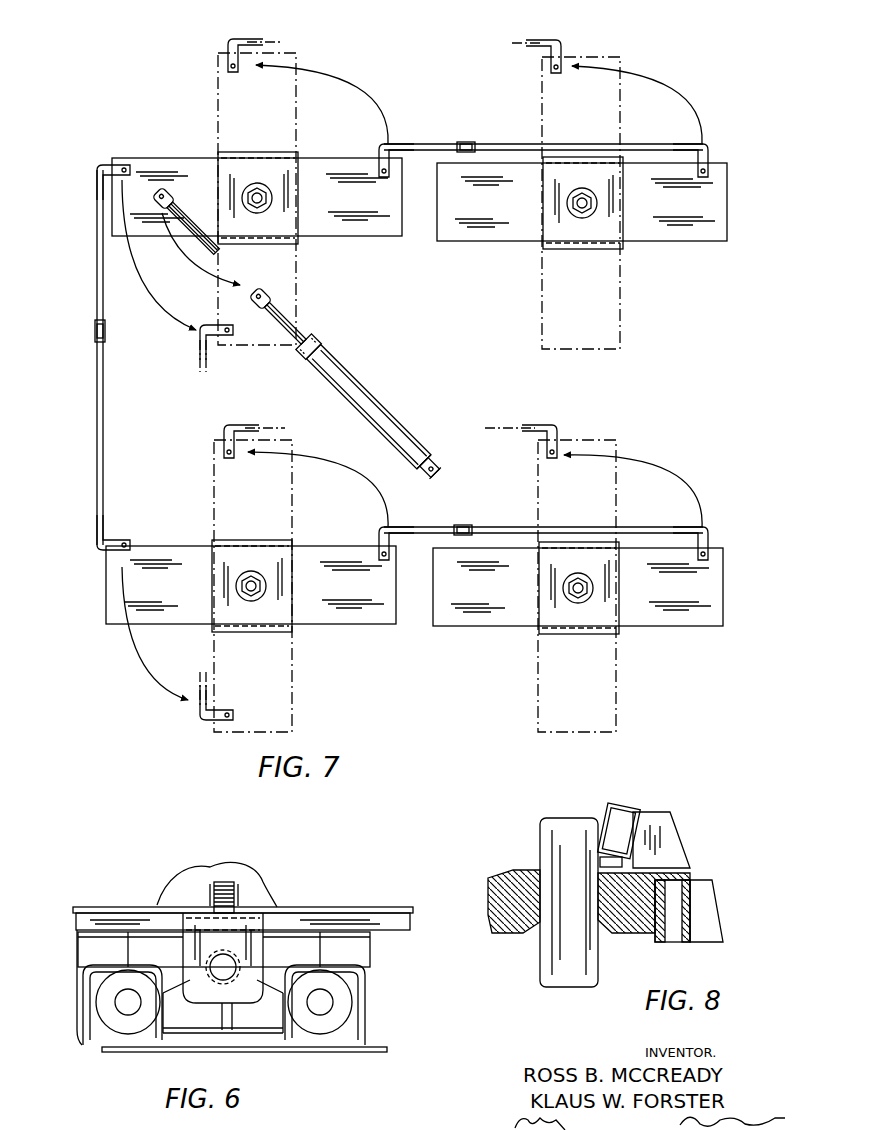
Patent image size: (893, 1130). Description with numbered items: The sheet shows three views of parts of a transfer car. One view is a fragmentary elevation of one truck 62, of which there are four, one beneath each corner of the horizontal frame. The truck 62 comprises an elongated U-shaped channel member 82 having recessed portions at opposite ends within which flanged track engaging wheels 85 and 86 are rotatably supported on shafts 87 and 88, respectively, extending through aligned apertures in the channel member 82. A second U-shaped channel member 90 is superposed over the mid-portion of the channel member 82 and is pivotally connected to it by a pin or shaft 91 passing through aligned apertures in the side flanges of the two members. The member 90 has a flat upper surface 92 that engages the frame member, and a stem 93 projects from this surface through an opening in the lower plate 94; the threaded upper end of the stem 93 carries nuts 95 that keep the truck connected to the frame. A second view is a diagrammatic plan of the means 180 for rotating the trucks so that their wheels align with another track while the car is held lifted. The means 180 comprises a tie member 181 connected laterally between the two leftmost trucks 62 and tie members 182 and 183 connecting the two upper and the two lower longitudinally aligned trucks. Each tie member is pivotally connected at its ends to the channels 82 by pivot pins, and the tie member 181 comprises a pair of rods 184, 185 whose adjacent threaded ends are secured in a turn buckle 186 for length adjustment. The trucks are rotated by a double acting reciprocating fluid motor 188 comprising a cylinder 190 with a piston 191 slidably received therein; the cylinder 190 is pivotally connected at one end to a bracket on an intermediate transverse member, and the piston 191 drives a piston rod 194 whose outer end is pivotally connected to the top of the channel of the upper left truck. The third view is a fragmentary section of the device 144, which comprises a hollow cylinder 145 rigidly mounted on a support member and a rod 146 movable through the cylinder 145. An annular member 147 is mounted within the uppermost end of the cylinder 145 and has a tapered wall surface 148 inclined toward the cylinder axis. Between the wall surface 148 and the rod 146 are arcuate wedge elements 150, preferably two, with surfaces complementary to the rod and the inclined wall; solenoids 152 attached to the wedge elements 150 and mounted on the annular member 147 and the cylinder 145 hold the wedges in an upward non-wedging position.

In FIG. 7, the truck 62 is at (257, 164).
In FIG. 7, the flat upper surface 92 is at (292, 172).
In FIG. 7, the stem 93 is at (265, 200).
In FIG. 6, the stem 93 is at (222, 881).
In FIG. 7, the tie member 182 is at (477, 143).
In FIG. 7, the tie member 183 is at (469, 527).
In FIG. 7, the tie member 181 is at (107, 357).
In FIG. 7, the rod 185 is at (97, 300).
In FIG. 7, the rod 184 is at (96, 520).
In FIG. 7, the turn buckle 186 is at (108, 331).
In FIG. 7, the means for rotating the trucks 180 is at (364, 364).
In FIG. 7, the piston rod 194 is at (295, 326).
In FIG. 7, the piston 191 is at (320, 346).
In FIG. 7, the cylinder 190 is at (384, 421).
In FIG. 7, the double acting reciprocating fluid motor 188 is at (414, 451).
In FIG. 6, the lower plate 94 is at (130, 908).
In FIG. 6, the nuts 95 is at (239, 895).
In FIG. 6, the U-shaped channel member 90 is at (265, 915).
In FIG. 6, the pin or shaft 91 is at (228, 976).
In FIG. 6, the U-shaped channel member 82 is at (362, 950).
In FIG. 6, the shaft 88 is at (328, 1000).
In FIG. 6, the flanged track engaging wheel 86 is at (352, 1026).
In FIG. 6, the shaft 87 is at (117, 1006).
In FIG. 6, the flanged track engaging wheel 85 is at (97, 1040).
In FIG. 8, the device 144 is at (606, 900).
In FIG. 8, the rod 146 is at (585, 986).
In FIG. 8, the arcuate wedge elements 150 is at (525, 869).
In FIG. 8, the tapered wall surface 148 is at (604, 934).
In FIG. 8, the solenoids 152 is at (626, 811).
In FIG. 8, the annular member 147 is at (642, 936).
In FIG. 8, the hollow cylinder 145 is at (684, 936).